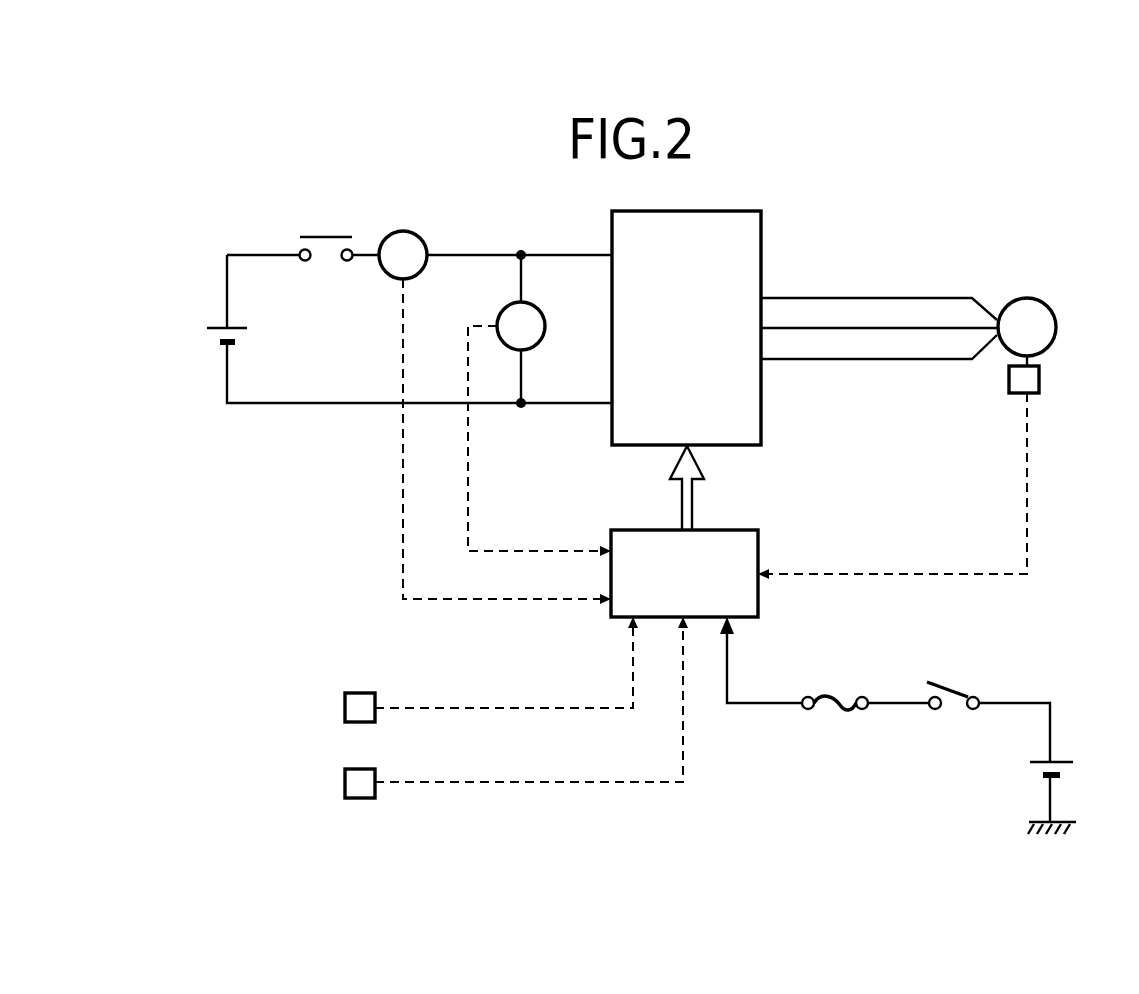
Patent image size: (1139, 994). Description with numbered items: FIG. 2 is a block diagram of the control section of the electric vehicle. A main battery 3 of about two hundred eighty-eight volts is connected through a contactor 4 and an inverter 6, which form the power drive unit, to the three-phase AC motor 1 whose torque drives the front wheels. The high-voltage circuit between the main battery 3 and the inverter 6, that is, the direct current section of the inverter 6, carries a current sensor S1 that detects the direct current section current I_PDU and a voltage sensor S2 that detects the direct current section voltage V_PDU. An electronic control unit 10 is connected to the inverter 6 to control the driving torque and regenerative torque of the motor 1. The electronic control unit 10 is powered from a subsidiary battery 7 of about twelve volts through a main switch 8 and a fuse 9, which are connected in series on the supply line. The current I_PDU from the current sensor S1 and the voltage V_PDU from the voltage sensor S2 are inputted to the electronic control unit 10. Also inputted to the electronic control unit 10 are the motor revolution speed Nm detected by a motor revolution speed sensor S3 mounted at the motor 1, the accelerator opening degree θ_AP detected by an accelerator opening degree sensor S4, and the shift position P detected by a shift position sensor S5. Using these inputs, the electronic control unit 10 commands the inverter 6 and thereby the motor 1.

The three-phase AC motor 1 is at (1047, 302).
The main battery 3 is at (237, 332).
The contactor 4 is at (327, 232).
The inverter 6 is at (763, 247).
The subsidiary battery 7 is at (1030, 768).
The main switch 8 is at (945, 686).
The fuse 9 is at (829, 692).
The electronic control unit 10 is at (755, 530).
The current sensor S1 is at (420, 235).
The voltage sensor S2 is at (543, 318).
The motor revolution speed sensor S3 is at (1039, 375).
The accelerator opening degree sensor S4 is at (345, 708).
The shift position sensor S5 is at (345, 782).